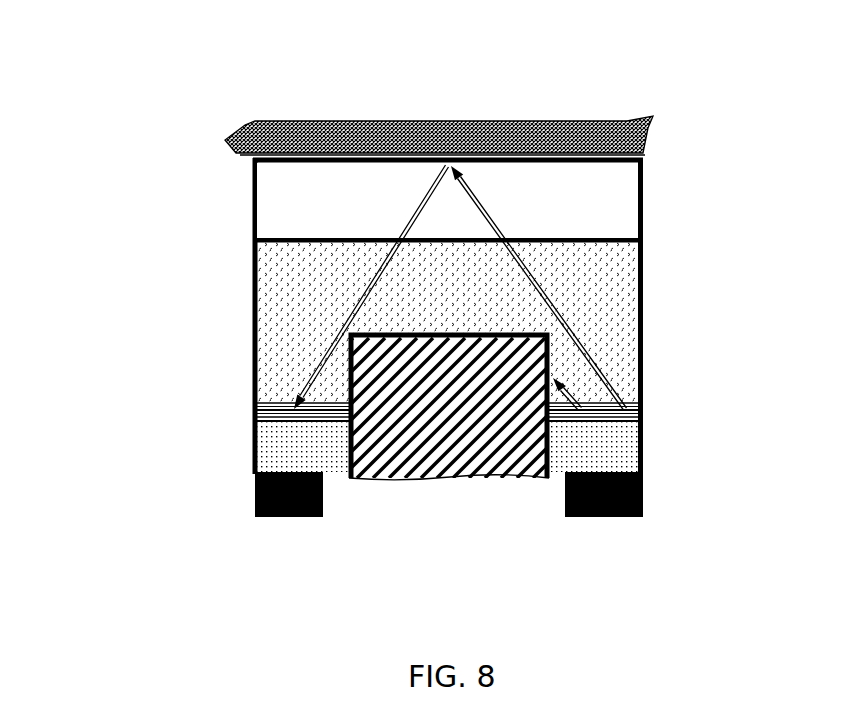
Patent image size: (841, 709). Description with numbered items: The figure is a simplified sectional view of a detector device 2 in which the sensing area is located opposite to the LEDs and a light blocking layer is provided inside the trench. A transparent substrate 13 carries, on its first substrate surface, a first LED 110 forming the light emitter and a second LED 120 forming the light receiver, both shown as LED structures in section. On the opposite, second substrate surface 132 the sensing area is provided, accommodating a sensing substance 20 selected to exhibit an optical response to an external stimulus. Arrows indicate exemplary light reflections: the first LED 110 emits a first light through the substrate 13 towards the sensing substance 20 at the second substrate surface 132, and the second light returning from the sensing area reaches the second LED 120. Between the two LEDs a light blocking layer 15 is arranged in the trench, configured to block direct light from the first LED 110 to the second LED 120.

The light emitting device 2 is at (60, 69).
The substrate 13 is at (280, 202).
The light blocking layer 15 is at (442, 417).
The sensing substance 20 is at (547, 140).
The first LED 110 is at (607, 447).
The second LED 120 is at (277, 442).
The second substrate surface 132 is at (360, 152).